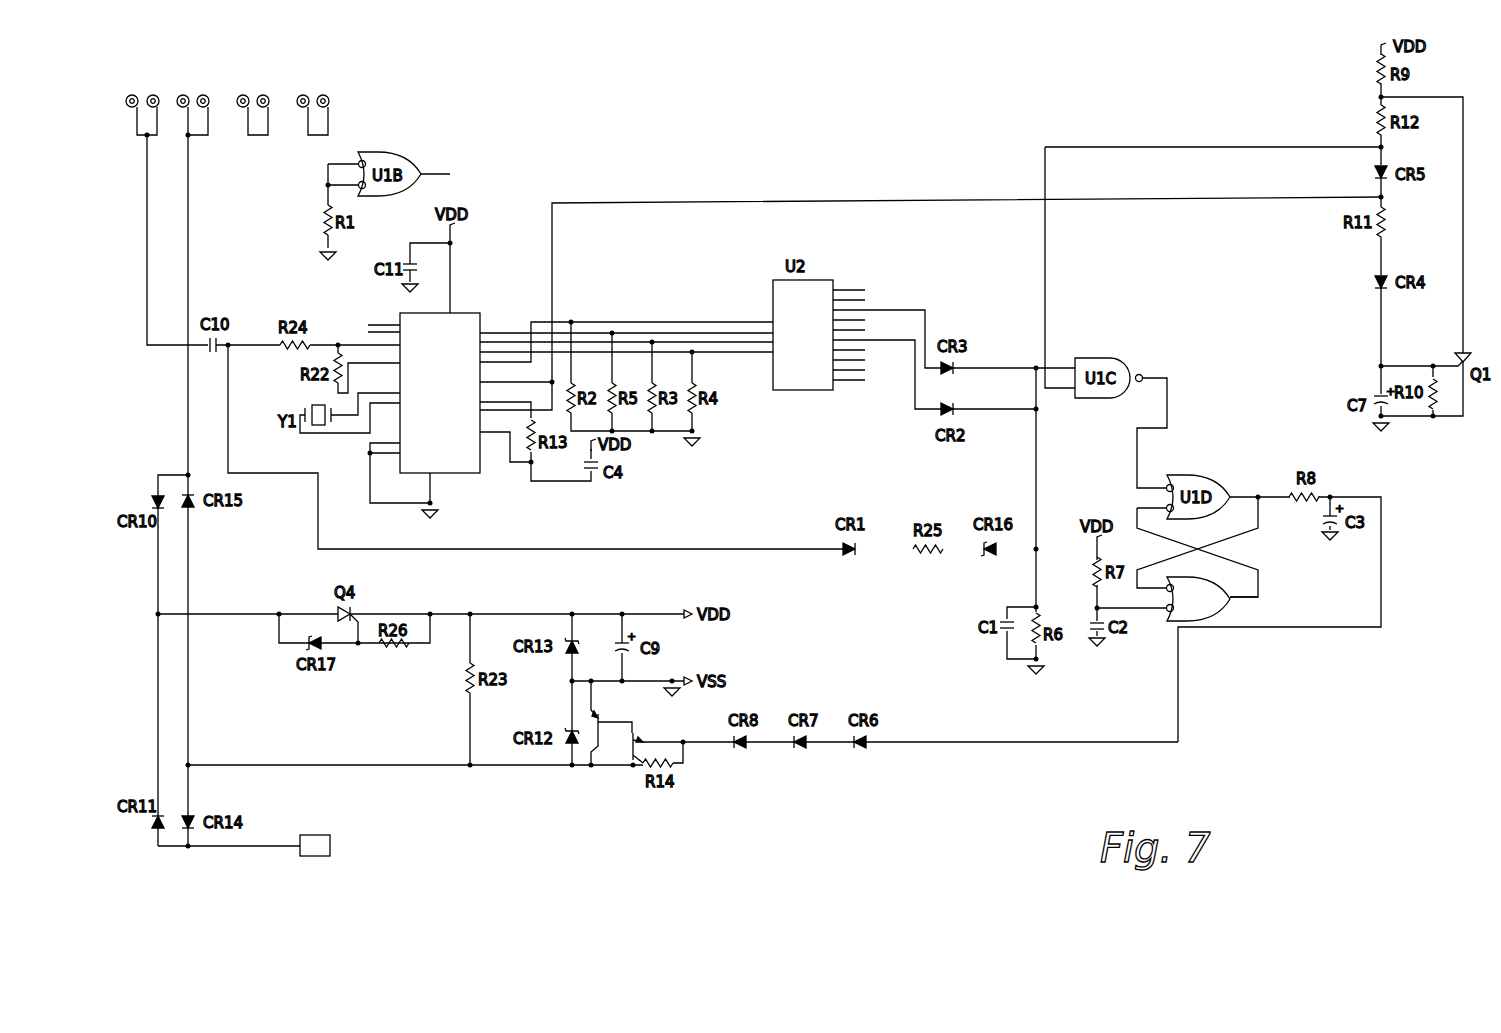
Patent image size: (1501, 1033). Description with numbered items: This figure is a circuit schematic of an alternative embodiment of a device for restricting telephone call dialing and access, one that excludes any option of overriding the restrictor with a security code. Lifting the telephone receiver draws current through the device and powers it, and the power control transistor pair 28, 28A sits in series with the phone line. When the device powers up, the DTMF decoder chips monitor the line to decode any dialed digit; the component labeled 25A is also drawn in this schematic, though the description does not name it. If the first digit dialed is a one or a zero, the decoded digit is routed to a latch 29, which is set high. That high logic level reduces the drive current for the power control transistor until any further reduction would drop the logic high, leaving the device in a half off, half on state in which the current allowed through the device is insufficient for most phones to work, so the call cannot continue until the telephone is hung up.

The microcontroller U3 25A is at (482, 322).
The power control transistor pair 28 is at (597, 735).
The power control transistor pair 28A is at (637, 745).
The latch 29 is at (1204, 620).